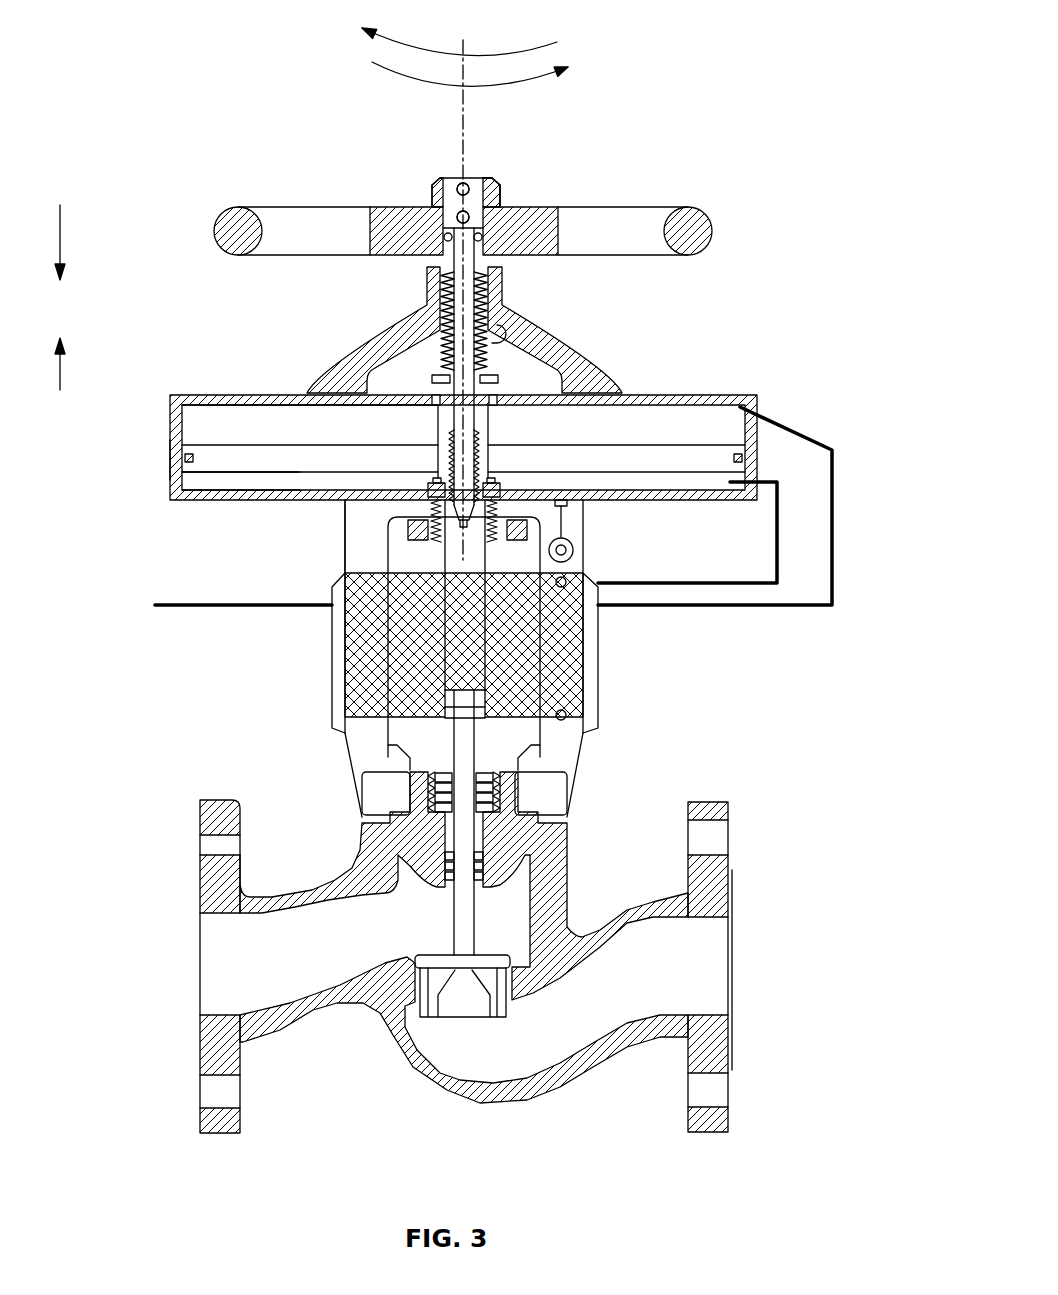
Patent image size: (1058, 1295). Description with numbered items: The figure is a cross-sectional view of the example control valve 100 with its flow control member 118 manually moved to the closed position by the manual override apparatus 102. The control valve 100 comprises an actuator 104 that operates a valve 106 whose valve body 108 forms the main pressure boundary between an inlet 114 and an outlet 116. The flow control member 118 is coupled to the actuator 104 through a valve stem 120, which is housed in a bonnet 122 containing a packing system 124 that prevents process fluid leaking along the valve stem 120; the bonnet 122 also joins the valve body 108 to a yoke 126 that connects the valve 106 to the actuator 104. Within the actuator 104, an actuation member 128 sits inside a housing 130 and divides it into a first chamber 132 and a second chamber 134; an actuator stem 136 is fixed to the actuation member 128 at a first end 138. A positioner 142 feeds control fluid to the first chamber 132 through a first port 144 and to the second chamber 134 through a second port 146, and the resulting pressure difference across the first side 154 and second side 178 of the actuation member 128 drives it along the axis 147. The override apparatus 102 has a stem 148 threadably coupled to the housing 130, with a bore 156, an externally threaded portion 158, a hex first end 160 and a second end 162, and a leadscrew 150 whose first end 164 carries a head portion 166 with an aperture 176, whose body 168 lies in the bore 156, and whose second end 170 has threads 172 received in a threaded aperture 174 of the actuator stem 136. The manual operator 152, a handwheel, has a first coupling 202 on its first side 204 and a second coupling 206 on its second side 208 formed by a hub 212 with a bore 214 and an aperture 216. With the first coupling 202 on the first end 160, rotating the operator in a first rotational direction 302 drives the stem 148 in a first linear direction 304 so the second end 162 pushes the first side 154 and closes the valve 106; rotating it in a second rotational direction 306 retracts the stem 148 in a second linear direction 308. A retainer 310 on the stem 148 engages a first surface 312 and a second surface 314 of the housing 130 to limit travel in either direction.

The control valve 100 is at (278, 98).
The manual override apparatus 102 is at (500, 195).
The actuator 104 is at (447, 416).
The valve 106 is at (461, 932).
The valve body 108 is at (553, 1090).
The inlet 114 is at (200, 1050).
The outlet 116 is at (731, 985).
The flow control member 118 is at (508, 1000).
The valve stem 120 is at (445, 900).
The bonnet 122 is at (375, 792).
The packing system 124 is at (497, 783).
The yoke 126 is at (352, 735).
The actuation member 128 is at (685, 452).
The housing 130 is at (172, 457).
The first chamber 132 is at (242, 438).
The second chamber 134 is at (175, 493).
The actuator stem 136 is at (462, 567).
The first end 138 is at (490, 500).
The control unit or positioner 142 is at (565, 647).
The first port or passageway 144 is at (833, 540).
The second port or passageway 146 is at (776, 548).
The axis 147 is at (466, 125).
The first drive member or stem 148 is at (478, 362).
The second drive member or leadscrew 150 is at (480, 410).
The manual operator 152 is at (500, 230).
The first side 154 is at (283, 447).
The bore 156 is at (477, 258).
The threaded portion 158 is at (428, 300).
The first end 160 is at (440, 225).
The second end 162 is at (447, 445).
The first end 164 is at (472, 185).
The head portion 166 is at (477, 215).
The body 168 is at (497, 332).
The second end 170 is at (452, 490).
The threads 172 is at (478, 455).
The threaded aperture 174 is at (472, 540).
The aperture 176 is at (470, 218).
The second side 178 is at (262, 478).
The first coupling 202 is at (477, 329).
The first side 204 is at (286, 256).
The second coupling 206 is at (496, 192).
The second side 208 is at (262, 205).
The hub 212 is at (433, 190).
The bore 214 is at (478, 185).
The aperture 216 is at (462, 180).
The first rotational direction 302 is at (556, 42).
The first linear direction 304 is at (62, 240).
The second rotational direction 306 is at (372, 63).
The second linear direction 308 is at (62, 368).
The retainer 310 is at (430, 377).
The first surface 312 is at (500, 378).
The second surface 314 is at (480, 322).